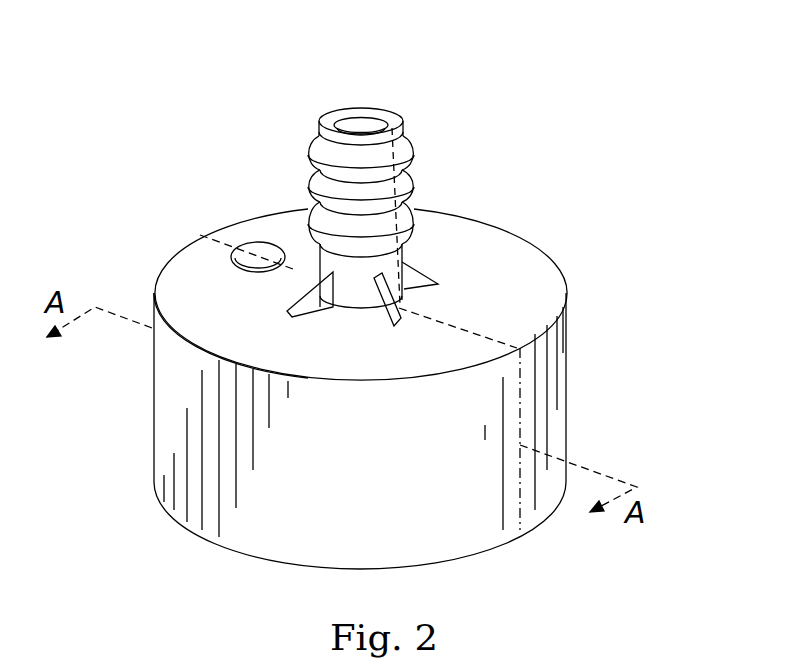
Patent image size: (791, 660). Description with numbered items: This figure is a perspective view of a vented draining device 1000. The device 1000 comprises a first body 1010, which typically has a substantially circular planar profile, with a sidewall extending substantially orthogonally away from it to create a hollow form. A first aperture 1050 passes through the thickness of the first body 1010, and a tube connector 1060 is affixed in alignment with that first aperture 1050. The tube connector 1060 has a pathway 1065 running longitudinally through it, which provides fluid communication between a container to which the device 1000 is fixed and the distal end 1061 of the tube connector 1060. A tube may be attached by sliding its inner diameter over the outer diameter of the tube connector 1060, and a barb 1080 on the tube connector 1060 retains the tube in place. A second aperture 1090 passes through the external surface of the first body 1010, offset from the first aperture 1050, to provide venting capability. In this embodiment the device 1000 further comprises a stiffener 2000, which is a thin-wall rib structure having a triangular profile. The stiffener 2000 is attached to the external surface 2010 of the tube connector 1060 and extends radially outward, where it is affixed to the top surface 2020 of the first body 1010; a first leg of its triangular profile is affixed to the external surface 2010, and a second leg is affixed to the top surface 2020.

The device 1000 is at (369, 287).
The first body 1010 is at (523, 270).
The first aperture 1050 is at (404, 303).
The tube connector 1060 is at (400, 128).
The distal end 1061 is at (425, 231).
The pathway 1065 is at (366, 108).
The barb 1080 is at (310, 147).
The second aperture 1090 is at (258, 262).
The stiffener 2000 is at (449, 231).
The external surface 2010 is at (360, 303).
The top surface 2020 is at (337, 333).